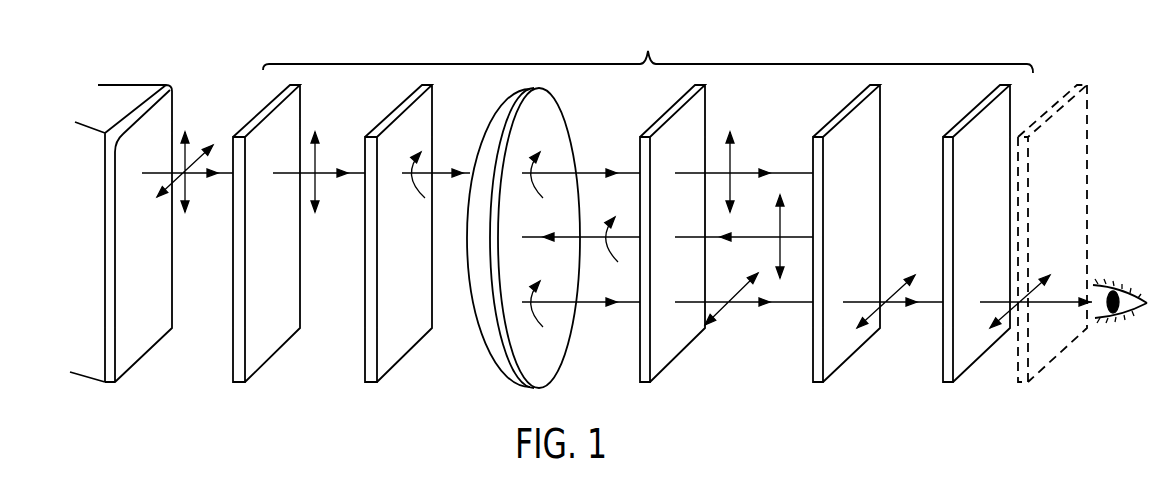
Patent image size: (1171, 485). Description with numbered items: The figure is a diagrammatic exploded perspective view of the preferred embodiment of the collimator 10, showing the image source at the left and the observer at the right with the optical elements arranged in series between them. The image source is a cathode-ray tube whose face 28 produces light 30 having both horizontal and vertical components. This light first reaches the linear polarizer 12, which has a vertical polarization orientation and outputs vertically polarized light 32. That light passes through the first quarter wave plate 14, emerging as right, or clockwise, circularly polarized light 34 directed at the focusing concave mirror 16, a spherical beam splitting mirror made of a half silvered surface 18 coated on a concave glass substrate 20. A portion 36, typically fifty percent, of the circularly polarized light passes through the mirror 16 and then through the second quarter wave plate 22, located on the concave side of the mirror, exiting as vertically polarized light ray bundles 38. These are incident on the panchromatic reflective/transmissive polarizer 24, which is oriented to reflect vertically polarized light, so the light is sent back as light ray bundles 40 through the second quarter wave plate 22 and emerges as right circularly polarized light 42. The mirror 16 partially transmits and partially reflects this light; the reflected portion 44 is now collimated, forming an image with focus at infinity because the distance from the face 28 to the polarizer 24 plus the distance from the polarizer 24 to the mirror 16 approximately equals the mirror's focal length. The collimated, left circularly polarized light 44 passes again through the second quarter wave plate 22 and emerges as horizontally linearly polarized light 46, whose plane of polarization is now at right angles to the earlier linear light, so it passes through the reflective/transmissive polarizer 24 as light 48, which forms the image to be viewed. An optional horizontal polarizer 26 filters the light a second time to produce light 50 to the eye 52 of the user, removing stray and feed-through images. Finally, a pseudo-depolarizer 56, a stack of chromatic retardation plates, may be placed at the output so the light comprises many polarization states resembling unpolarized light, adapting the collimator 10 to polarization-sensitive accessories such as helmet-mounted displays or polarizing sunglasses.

The collimator 10 is at (654, 45).
The polarizer 12 is at (278, 328).
The quarter wave plate 14 is at (403, 328).
The focusing concave mirror 16 is at (547, 343).
The half silvered surface 18 is at (555, 131).
The concave glass substrate 20 is at (489, 319).
The second quarter wave plate 22 is at (670, 327).
The panchromatic reflective/transmissive polarizer 24 is at (843, 342).
The horizontal polarizer 26 is at (972, 353).
The cathode-ray tube face 28 is at (147, 328).
The light 30 is at (227, 176).
The vertically polarized light 32 is at (358, 176).
The right circular polarized light 34 is at (473, 174).
The portion of circularly polarized light 36 is at (627, 172).
The vertically polarized light ray bundles 38 is at (792, 173).
The reflected light ray bundles 40 is at (742, 236).
The right circularly polarized light 42 is at (587, 236).
The collimated left circularly polarized light 44 is at (630, 305).
The horizontally linearly polarized light 46 is at (790, 305).
The light forming the image 48 is at (940, 300).
The output light 50 is at (995, 300).
The eye of a user 52 is at (1127, 293).
The pseudo-depolarizer 56 is at (1053, 100).